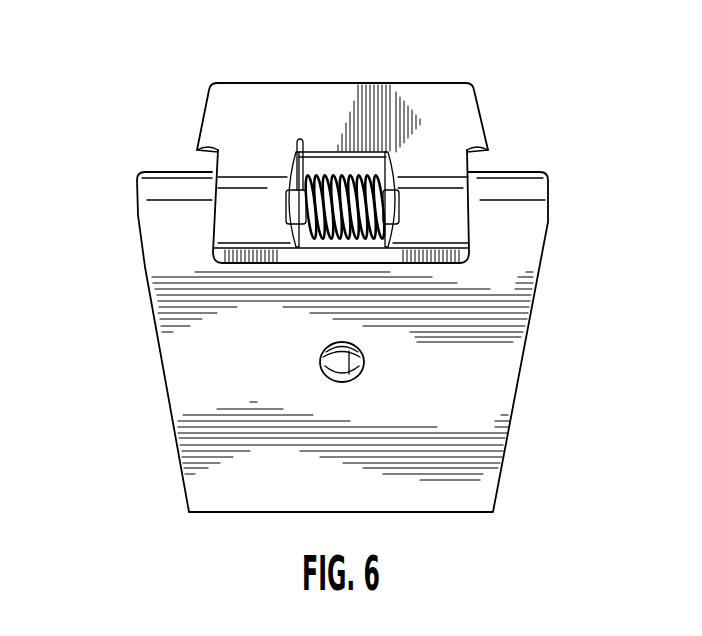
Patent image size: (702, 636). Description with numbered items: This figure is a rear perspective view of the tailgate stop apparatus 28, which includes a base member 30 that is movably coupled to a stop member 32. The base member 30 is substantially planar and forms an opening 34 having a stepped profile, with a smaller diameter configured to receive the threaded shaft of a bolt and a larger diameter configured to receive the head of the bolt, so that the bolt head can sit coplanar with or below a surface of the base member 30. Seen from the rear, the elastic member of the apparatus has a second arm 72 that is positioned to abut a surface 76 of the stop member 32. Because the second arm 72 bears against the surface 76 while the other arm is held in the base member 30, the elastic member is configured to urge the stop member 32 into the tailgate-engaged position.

The apparatus 28 is at (148, 141).
The base member 30 is at (176, 371).
The stop member 32 is at (471, 109).
The opening 34 is at (333, 364).
The second arm 72 is at (301, 140).
The surface 76 is at (323, 151).